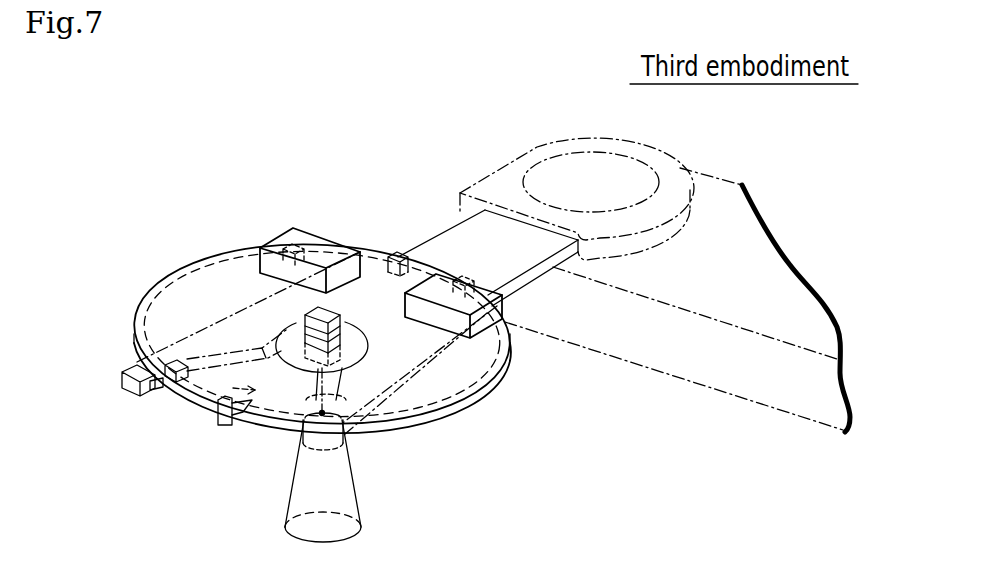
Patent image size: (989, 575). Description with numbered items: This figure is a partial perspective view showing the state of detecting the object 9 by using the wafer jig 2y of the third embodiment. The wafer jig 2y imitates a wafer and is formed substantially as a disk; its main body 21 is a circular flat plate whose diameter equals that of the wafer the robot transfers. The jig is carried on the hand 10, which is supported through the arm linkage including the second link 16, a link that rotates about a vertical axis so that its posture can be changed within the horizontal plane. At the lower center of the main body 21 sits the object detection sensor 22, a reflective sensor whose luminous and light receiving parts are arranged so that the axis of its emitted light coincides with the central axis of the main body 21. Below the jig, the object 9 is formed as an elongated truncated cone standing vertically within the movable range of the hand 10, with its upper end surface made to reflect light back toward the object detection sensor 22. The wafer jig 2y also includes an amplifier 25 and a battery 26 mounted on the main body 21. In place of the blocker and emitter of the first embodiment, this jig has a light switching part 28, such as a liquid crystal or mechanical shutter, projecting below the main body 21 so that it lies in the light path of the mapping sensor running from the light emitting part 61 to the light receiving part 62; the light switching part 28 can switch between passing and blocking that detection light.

The wafer jig 2y is at (182, 186).
The hand 10 is at (409, 238).
The second link 16 is at (766, 407).
The main body 21 is at (197, 298).
The object detection sensor 22 is at (350, 322).
The amplifier 25 is at (507, 320).
The battery 26 is at (288, 240).
The light switching part 28 is at (217, 413).
The light emitting part 61 is at (300, 440).
The light receiving part 62 is at (143, 397).
The object 9 is at (340, 493).